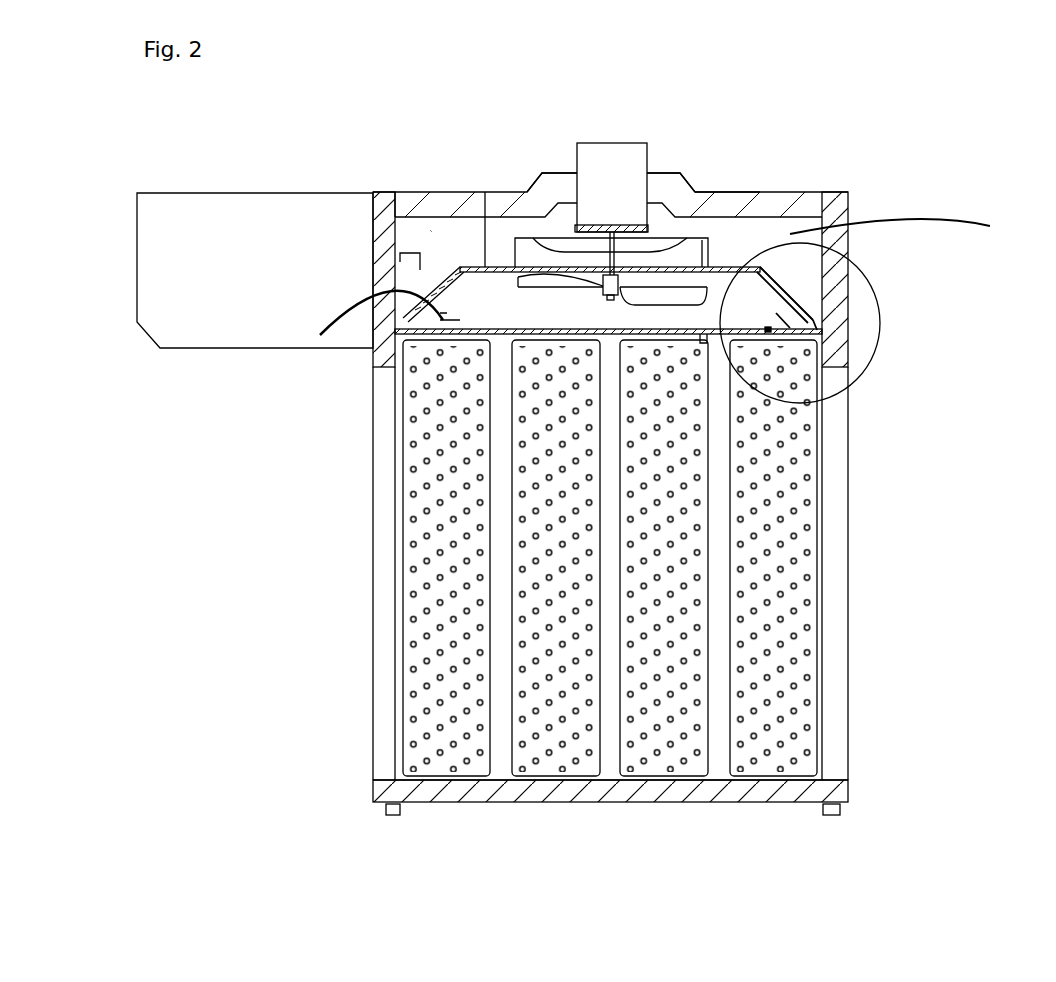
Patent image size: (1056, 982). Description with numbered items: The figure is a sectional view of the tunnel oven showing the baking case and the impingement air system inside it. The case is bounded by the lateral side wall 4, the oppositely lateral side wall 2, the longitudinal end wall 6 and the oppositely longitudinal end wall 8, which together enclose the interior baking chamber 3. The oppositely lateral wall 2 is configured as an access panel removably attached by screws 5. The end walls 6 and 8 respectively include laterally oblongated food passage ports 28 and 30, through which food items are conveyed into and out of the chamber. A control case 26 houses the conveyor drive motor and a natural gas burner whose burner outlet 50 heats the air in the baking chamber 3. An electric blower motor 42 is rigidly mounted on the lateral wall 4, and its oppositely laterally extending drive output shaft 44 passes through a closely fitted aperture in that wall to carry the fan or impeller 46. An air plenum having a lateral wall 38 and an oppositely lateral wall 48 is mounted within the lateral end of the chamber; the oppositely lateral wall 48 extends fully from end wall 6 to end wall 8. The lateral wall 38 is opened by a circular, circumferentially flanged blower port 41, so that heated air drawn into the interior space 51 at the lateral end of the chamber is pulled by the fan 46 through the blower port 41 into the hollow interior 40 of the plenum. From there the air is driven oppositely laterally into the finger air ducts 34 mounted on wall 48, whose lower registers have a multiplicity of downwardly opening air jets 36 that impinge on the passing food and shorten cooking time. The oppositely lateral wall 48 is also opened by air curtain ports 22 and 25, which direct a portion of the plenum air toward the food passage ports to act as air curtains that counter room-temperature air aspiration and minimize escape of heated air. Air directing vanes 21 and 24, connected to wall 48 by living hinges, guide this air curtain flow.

The oppositely lateral side wall 2 is at (562, 796).
The interior baking chamber 3 is at (872, 300).
The lateral side wall 4 is at (717, 247).
The screws 5 is at (840, 830).
The longitudinal end wall 6 is at (380, 782).
The oppositely longitudinal end wall 8 is at (837, 204).
The air directing vane 21 is at (880, 276).
The air curtain port 22 is at (443, 323).
The air directing vane 24 is at (405, 330).
The air curtain port 25 is at (782, 328).
The control case 26 is at (163, 244).
The food passage port 28 is at (383, 500).
The food passage port 30 is at (838, 520).
The upper finger air ducts 34 is at (810, 663).
The air jets 36 is at (797, 610).
The lateral wall of air plenum 38 is at (540, 265).
The hollow interior of plenum 40 is at (413, 253).
The blower port 41 is at (712, 248).
The electric blower motor 42 is at (600, 143).
The drive output shaft 44 is at (683, 265).
The fan or impeller 46 is at (540, 240).
The oppositely lateral wall of air plenum 48 is at (658, 254).
The burner outlet 50 is at (470, 287).
The interior space 51 is at (906, 232).